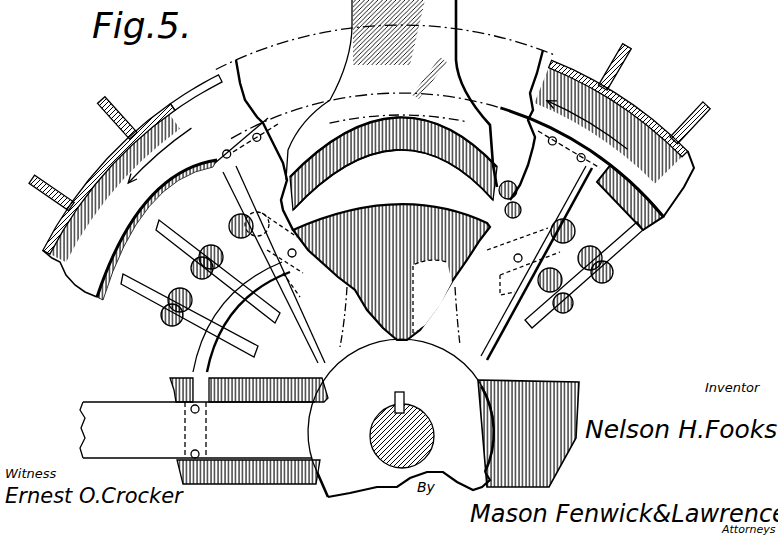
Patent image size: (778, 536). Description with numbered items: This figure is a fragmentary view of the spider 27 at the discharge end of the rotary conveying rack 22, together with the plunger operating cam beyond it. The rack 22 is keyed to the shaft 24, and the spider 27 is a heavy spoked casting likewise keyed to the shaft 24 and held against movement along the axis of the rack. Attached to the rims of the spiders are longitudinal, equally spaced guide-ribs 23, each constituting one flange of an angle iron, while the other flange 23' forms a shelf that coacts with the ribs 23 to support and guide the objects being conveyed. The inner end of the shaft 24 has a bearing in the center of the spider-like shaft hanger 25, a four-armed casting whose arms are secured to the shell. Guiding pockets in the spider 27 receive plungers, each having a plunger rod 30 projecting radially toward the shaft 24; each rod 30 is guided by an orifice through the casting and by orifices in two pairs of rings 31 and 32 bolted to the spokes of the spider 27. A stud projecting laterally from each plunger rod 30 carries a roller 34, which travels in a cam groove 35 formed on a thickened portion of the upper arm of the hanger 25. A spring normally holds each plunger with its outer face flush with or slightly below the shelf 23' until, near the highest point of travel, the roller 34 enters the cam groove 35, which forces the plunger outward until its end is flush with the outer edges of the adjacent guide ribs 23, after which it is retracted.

The rotary conveying rack 22 is at (692, 153).
The guide-ribs 23 is at (404, 96).
The shelf flange 23' is at (319, 145).
The shaft 24 is at (403, 410).
The shaft hanger 25 is at (548, 397).
The spider 27 is at (113, 417).
The plunger rod 30 is at (624, 244).
The guide rings 31 is at (206, 369).
The guide rings 32 is at (108, 292).
The roller 34 is at (430, 122).
The cam groove 35 is at (333, 167).